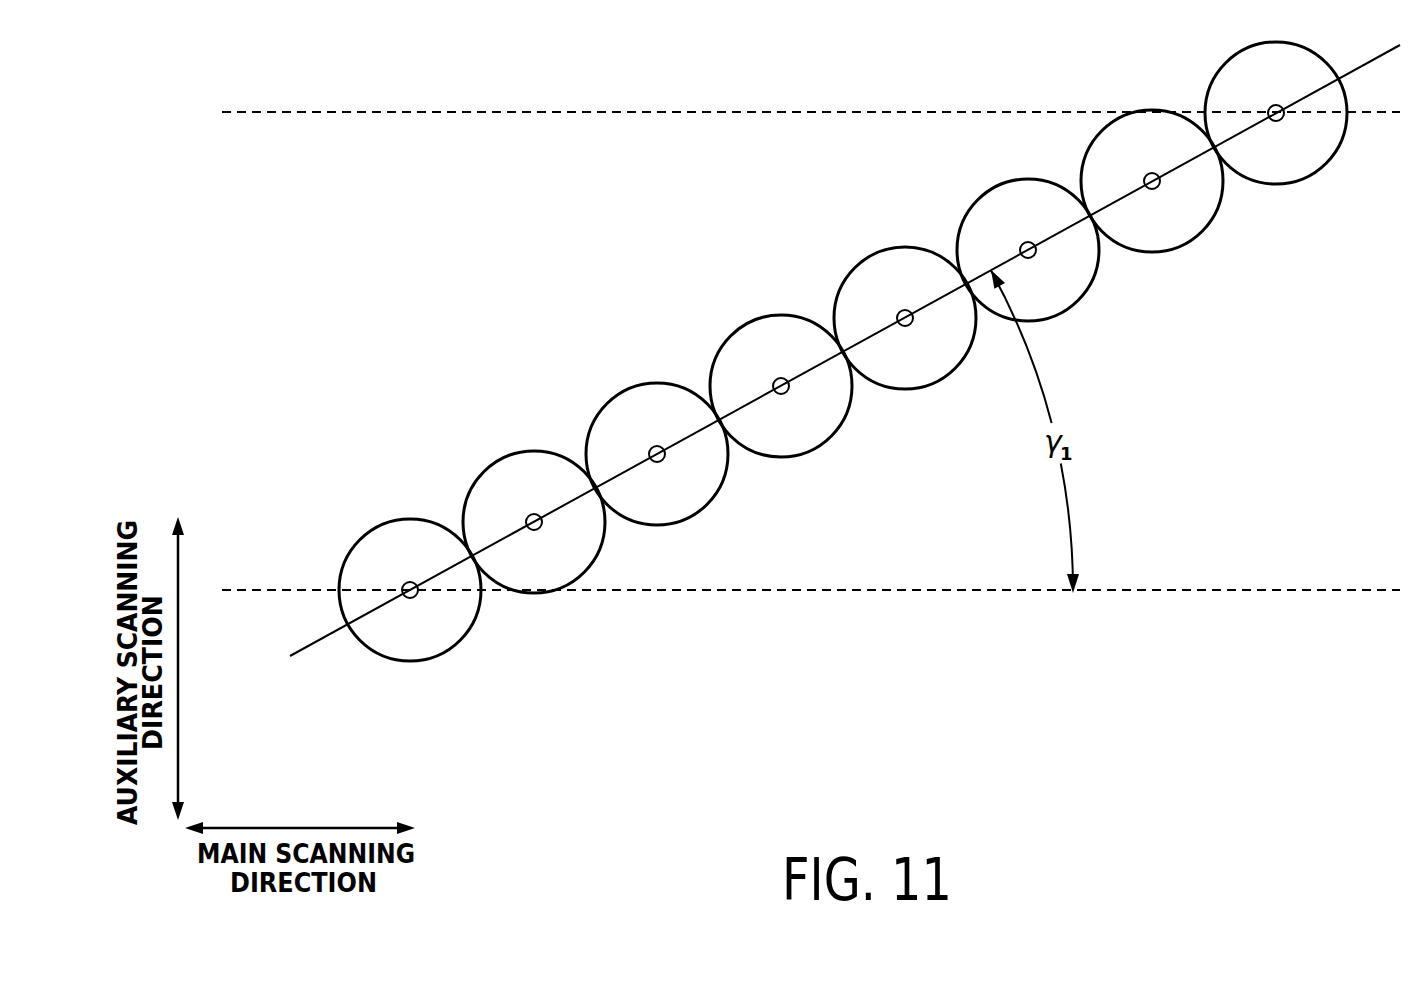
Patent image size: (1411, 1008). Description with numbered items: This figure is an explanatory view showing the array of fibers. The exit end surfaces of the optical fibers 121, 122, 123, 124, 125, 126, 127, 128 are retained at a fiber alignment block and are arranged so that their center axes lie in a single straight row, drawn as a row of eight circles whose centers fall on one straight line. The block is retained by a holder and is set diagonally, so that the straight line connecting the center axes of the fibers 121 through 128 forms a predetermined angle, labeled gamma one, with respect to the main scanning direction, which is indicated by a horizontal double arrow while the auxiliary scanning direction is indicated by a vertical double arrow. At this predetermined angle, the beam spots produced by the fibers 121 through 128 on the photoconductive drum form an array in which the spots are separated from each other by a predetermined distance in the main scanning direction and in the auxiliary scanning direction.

The optical fiber 121 is at (432, 642).
The optical fiber 122 is at (558, 576).
The optical fiber 123 is at (677, 506).
The optical fiber 124 is at (808, 434).
The optical fiber 125 is at (932, 366).
The optical fiber 126 is at (1062, 297).
The optical fiber 127 is at (1180, 228).
The optical fiber 128 is at (1295, 163).